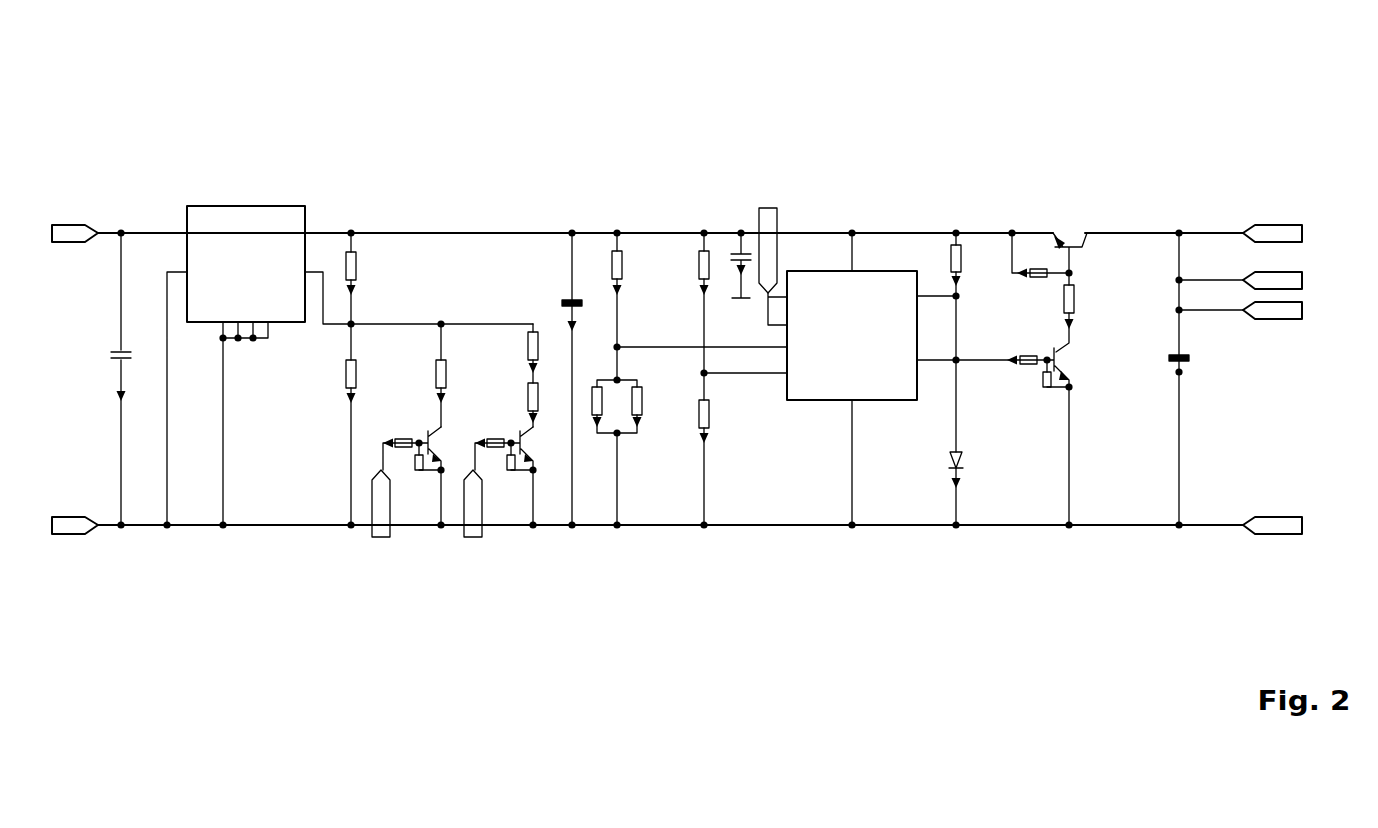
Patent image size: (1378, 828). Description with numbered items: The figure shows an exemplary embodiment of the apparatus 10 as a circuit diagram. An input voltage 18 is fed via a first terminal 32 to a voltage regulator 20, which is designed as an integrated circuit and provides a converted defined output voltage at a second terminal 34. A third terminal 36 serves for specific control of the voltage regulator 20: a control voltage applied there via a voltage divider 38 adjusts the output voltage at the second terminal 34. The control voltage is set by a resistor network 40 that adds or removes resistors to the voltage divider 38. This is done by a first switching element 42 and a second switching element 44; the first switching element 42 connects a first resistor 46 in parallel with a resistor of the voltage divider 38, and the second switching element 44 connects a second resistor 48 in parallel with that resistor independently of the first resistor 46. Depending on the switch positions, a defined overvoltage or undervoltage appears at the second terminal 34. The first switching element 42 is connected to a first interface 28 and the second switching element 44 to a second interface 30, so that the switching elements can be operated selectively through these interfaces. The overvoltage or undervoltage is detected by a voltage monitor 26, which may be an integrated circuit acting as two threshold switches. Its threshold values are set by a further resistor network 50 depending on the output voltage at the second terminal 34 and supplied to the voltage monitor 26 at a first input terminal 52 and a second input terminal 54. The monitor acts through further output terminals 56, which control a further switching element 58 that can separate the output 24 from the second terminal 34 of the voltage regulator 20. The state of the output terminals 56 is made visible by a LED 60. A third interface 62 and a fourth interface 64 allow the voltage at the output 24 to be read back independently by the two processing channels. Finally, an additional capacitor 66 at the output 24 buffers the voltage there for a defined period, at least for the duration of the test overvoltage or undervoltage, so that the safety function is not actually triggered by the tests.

The apparatus 10 is at (770, 110).
The input voltage 18 is at (66, 226).
The voltage regulator 20 is at (227, 206).
The output 24 is at (1275, 224).
The voltage monitor 26 is at (823, 269).
The first interface 28 is at (380, 540).
The second interface 30 is at (474, 540).
The first terminal 32 is at (186, 231).
The second terminal 34 is at (316, 230).
The third terminal 36 is at (318, 248).
The voltage divider 38 is at (370, 298).
The resistor network 40 is at (460, 298).
The first switching element 42 is at (433, 478).
The second switching element 44 is at (522, 478).
The first resistor 46 is at (434, 382).
The second resistor 48 is at (548, 392).
The further resistor network 50 is at (662, 266).
The first input terminal 52 is at (770, 378).
The second input terminal 54 is at (782, 378).
The further output terminals 56 is at (945, 340).
The further switching element 58 is at (1058, 398).
The LED 60 is at (950, 490).
The third interface 62 is at (1305, 280).
The fourth interface 64 is at (1305, 312).
The capacitor 66 is at (1173, 385).